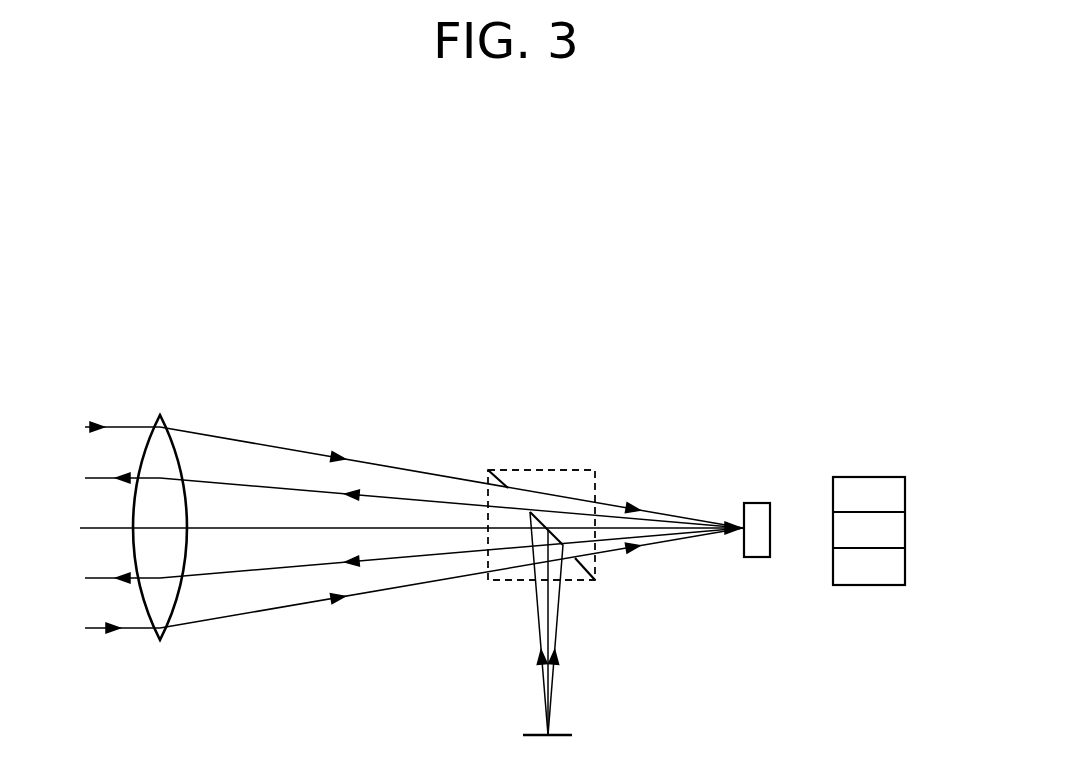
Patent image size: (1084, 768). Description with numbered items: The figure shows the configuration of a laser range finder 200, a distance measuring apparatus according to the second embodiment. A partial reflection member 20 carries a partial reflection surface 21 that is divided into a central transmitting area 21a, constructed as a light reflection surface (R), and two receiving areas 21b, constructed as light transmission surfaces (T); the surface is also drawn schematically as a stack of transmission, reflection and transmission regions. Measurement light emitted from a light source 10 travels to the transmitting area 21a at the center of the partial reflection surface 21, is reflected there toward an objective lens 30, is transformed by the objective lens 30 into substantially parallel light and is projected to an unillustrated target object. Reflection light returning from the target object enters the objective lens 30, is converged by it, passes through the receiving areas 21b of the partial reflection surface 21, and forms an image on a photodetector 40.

The light source 10 is at (562, 735).
The partial reflection member 20 is at (487, 466).
The partial reflection surface 21 is at (699, 467).
The transmitting area 21a is at (549, 526).
The receiving areas 21b is at (520, 492).
The objective lens 30 is at (157, 414).
The photodetector 40 is at (752, 502).
The laser range finder 200 is at (459, 310).